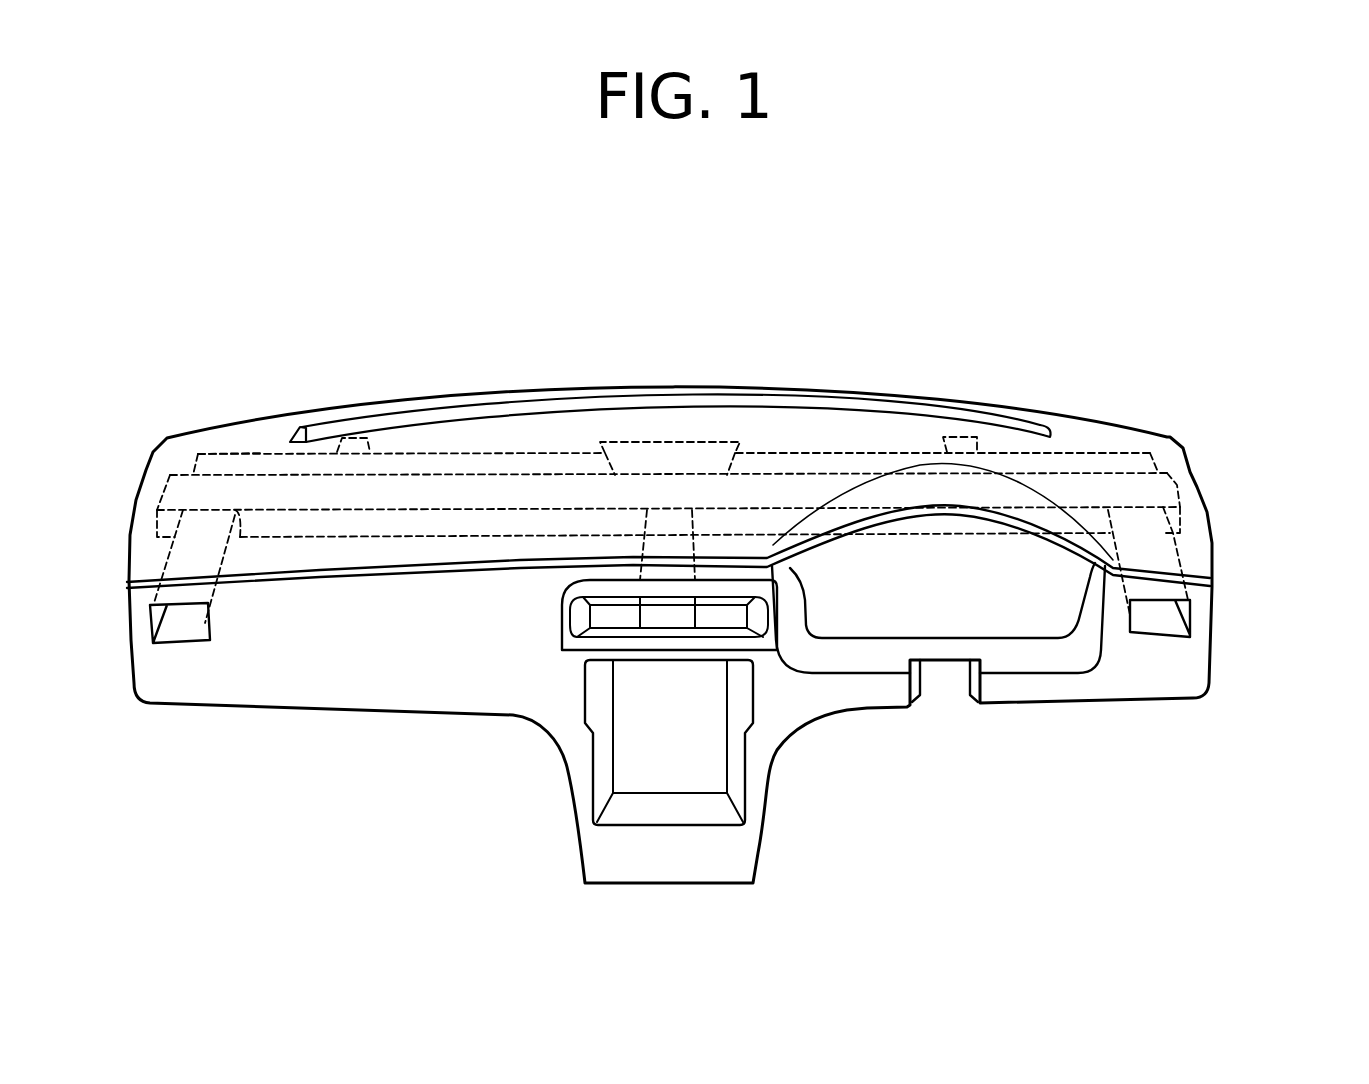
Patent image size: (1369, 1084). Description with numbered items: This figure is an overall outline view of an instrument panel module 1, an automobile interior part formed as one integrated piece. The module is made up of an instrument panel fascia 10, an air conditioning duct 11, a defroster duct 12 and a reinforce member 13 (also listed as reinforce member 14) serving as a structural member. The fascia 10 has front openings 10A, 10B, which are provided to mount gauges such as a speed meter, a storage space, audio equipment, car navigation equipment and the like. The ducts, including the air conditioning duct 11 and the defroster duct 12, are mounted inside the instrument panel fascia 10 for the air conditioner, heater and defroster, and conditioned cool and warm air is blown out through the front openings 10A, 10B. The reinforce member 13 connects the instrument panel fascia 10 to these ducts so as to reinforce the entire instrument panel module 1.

The instrument panel module 1 is at (1188, 352).
The instrument panel fascia 10 is at (357, 710).
The front opening 10A is at (697, 752).
The front opening 10B is at (197, 628).
The air conditioning duct 11 is at (1193, 485).
The defroster duct 12 is at (1060, 427).
The reinforce member 13 is at (1107, 440).
The reinforce member 14 is at (267, 453).